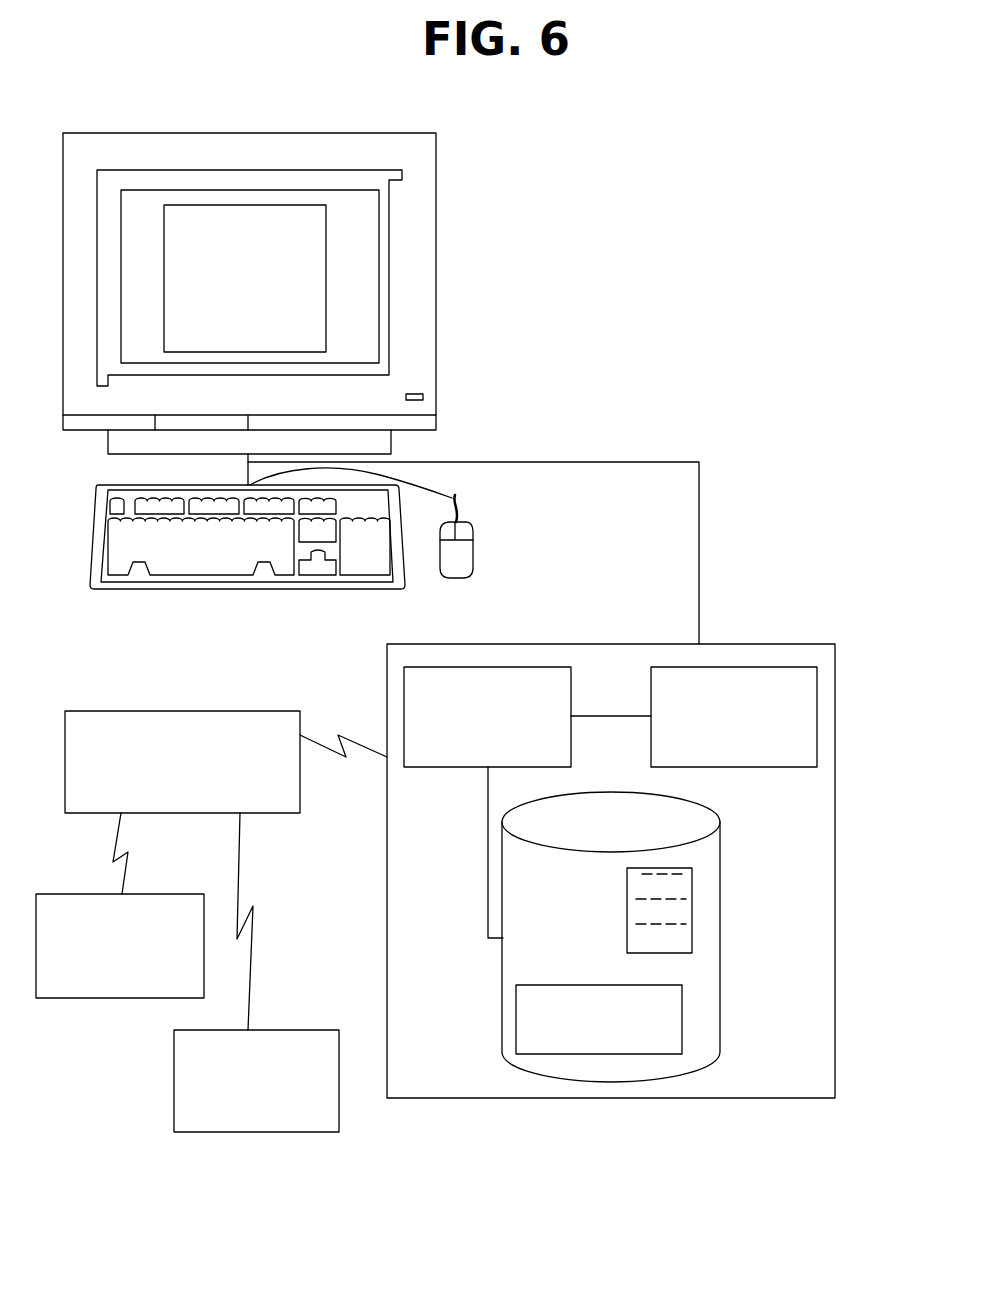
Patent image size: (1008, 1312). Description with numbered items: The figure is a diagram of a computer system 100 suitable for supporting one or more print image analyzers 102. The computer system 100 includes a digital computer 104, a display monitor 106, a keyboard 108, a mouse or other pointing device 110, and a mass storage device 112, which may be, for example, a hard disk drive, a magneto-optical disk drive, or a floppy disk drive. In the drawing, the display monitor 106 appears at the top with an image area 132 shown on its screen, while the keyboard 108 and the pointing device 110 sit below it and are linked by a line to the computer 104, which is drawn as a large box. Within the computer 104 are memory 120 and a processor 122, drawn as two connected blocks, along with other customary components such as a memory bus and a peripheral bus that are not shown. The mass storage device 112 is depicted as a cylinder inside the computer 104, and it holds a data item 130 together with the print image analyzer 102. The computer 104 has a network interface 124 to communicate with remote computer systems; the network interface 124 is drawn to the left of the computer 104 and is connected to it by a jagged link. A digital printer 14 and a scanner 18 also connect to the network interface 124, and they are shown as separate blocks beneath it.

The computer system 100 is at (537, 118).
The display monitor 106 is at (381, 388).
The display screen image 132 is at (326, 295).
The keyboard 108 is at (262, 589).
The mouse or other pointing device 110 is at (473, 530).
The digital computer 104 is at (665, 871).
The memory 120 is at (427, 767).
The processor 122 is at (777, 767).
The mass storage device 112 is at (620, 937).
The print image data 130 is at (692, 938).
The print image analyzer 102 is at (516, 1018).
The network interface 124 is at (128, 711).
The digital printer 14 is at (59, 998).
The scanner 18 is at (174, 1108).